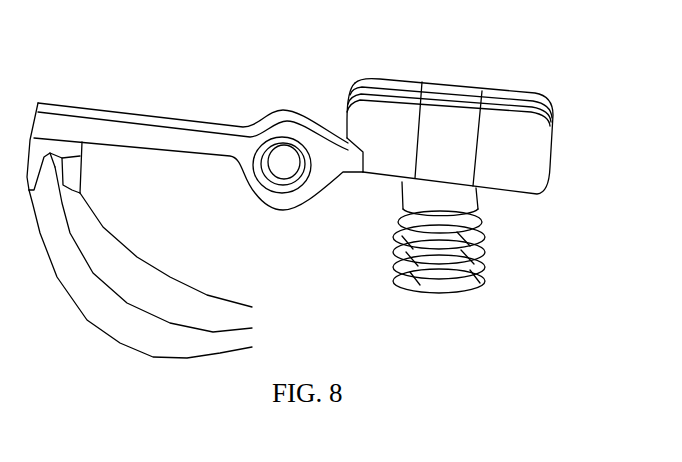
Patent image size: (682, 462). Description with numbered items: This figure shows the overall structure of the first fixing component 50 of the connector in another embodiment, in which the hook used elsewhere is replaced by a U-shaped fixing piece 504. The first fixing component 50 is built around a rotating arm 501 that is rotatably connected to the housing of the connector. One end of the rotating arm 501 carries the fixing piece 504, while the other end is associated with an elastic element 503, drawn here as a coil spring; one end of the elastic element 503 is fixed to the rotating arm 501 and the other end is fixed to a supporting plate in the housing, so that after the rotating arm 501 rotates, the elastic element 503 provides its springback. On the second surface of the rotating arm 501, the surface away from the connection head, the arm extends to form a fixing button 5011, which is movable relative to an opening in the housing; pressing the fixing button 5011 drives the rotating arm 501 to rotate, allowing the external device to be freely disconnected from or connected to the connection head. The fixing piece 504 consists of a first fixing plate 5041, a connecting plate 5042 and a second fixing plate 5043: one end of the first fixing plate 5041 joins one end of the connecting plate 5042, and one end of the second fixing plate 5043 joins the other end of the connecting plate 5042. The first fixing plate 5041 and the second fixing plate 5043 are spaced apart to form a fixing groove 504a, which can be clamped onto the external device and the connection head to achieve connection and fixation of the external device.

The first fixing component 50 is at (312, 184).
The rotating arm 501 is at (322, 157).
The fixing button 5011 is at (466, 97).
The elastic element 503 is at (395, 244).
The fixing piece 504 is at (191, 255).
The fixing groove 504a is at (63, 182).
The first fixing plate 5041 is at (162, 274).
The connecting plate 5042 is at (175, 251).
The second fixing plate 5043 is at (188, 254).